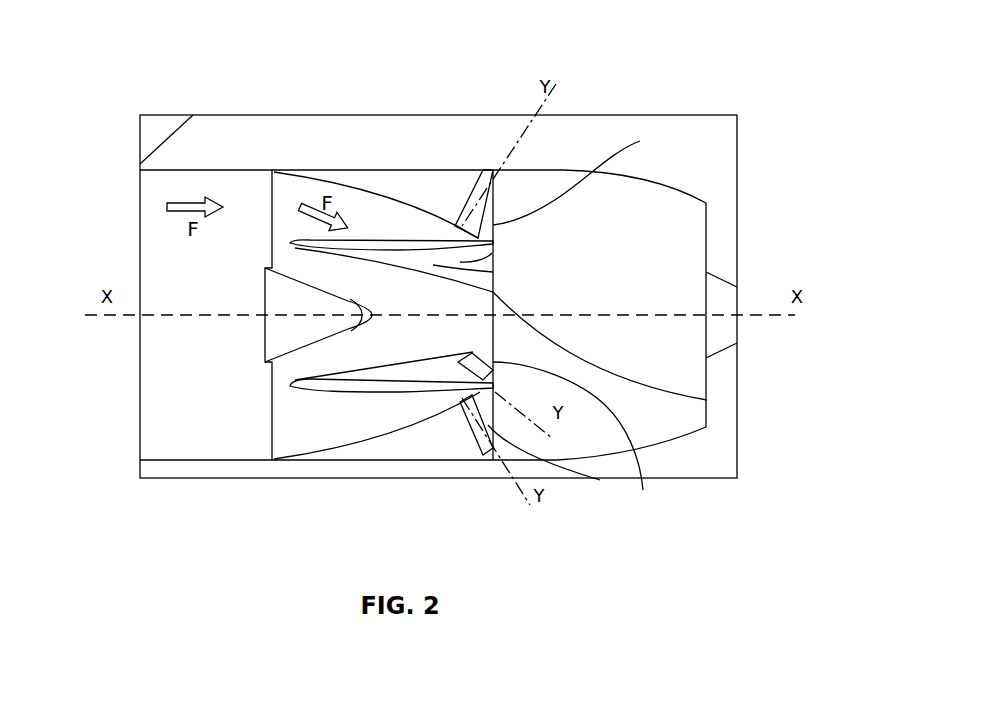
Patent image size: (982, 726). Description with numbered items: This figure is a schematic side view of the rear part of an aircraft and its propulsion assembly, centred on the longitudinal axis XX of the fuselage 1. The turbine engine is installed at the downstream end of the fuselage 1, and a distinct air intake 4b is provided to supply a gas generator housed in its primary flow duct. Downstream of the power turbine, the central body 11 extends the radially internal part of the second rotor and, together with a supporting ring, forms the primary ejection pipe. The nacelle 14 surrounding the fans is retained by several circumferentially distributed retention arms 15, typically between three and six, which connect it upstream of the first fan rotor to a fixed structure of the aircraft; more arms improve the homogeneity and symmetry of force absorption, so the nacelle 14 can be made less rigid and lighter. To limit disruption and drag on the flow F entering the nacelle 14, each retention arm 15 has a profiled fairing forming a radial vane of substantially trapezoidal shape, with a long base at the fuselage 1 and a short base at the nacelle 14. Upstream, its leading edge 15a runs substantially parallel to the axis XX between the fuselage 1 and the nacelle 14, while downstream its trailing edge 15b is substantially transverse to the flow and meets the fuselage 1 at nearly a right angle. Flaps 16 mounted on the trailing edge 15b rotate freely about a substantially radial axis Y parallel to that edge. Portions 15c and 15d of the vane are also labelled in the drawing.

The fuselage 1 is at (190, 433).
The air intake 4b is at (278, 341).
The central body 11 is at (718, 294).
The nacelle 14 is at (655, 213).
The retention arm 15 is at (433, 240).
The leading edge 15a is at (393, 250).
The trailing edge 15b is at (493, 272).
The blade root / inner contour 15c is at (707, 400).
The blade flap portion 15d is at (492, 253).
The flap 16 is at (493, 207).